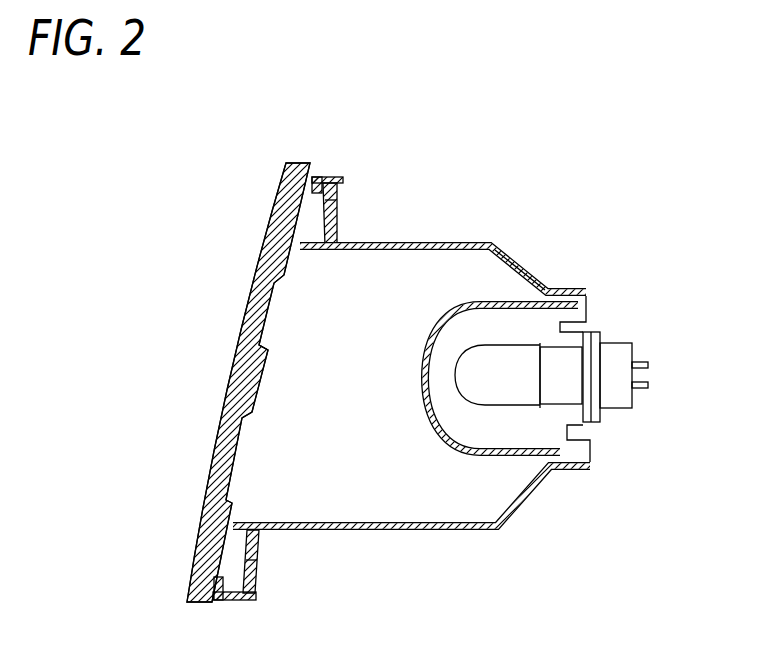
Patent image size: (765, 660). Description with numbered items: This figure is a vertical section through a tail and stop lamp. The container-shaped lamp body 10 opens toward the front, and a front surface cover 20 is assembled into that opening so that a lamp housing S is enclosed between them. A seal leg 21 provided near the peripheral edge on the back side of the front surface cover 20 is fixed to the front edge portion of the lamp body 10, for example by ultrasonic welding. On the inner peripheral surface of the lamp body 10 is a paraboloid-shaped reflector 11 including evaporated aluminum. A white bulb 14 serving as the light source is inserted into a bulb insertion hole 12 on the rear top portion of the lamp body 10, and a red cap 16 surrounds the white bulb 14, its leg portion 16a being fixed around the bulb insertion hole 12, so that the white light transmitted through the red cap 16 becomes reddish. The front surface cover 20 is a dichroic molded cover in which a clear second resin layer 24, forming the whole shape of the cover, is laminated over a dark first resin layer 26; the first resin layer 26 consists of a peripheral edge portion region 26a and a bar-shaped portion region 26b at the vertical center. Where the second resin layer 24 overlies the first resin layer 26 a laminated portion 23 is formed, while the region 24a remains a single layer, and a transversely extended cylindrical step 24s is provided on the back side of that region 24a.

The lamp body 10 is at (497, 243).
The reflector 11 is at (517, 270).
The bulb insertion hole 12 is at (592, 356).
The white bulb 14 is at (497, 407).
The red cap 16 is at (445, 457).
The leg portion 16a is at (575, 468).
The front surface cover 20 is at (337, 102).
The seal leg 21 is at (322, 185).
The laminated portion 23 is at (274, 165).
The second resin layer 24 is at (290, 163).
The single-layer region 24a is at (252, 276).
The cylindrical step 24s is at (262, 277).
The first resin layer 26 is at (313, 166).
The peripheral edge portion region 26a is at (322, 216).
The bar-shaped portion region 26b is at (248, 340).
The lamp housing S is at (357, 510).